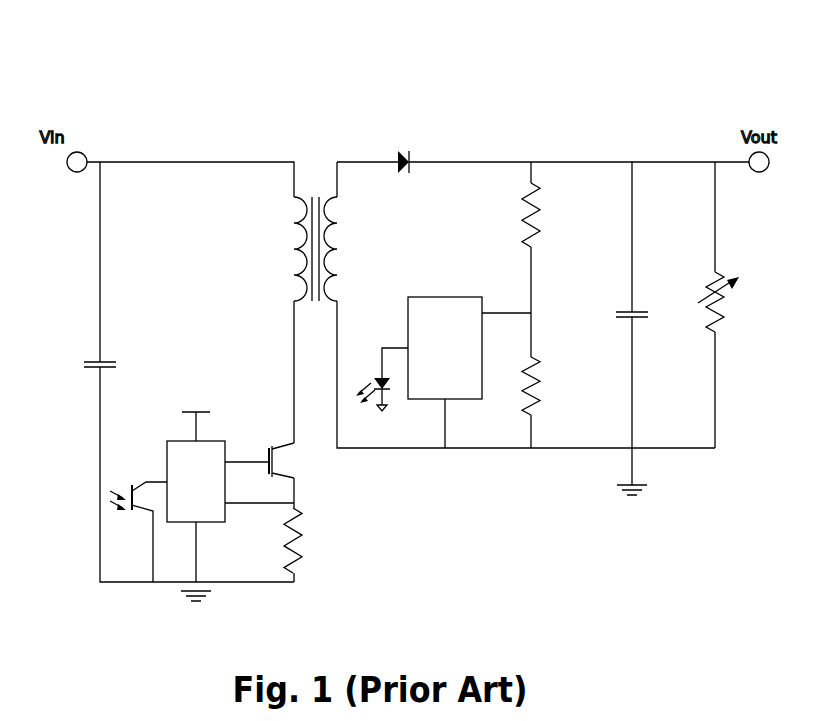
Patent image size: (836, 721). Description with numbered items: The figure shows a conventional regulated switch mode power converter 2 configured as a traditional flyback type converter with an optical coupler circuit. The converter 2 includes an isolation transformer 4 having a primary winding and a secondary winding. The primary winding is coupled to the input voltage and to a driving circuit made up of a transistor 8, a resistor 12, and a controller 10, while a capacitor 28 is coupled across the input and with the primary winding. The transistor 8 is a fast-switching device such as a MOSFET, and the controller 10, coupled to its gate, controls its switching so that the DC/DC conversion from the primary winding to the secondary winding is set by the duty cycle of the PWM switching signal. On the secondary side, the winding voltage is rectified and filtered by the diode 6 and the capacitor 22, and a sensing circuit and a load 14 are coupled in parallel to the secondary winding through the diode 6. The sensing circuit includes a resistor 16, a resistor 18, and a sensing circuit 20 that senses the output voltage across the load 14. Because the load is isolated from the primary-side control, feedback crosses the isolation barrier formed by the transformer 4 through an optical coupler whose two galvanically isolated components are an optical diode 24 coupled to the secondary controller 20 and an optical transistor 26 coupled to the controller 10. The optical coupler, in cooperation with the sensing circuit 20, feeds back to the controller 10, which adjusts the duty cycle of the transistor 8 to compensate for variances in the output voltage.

The power converter 2 is at (668, 79).
The isolation transformer 4 is at (316, 176).
The diode 6 is at (404, 151).
The transistor 8 is at (270, 446).
The controller 10 is at (221, 441).
The resistor 12 is at (285, 540).
The load 14 is at (729, 291).
The resistor 16 is at (522, 216).
The resistor 18 is at (540, 392).
The sensing circuit 20 is at (441, 297).
The capacitor 22 is at (614, 313).
The optical diode 24 is at (366, 376).
The optical transistor 26 is at (134, 483).
The capacitor 28 is at (84, 363).